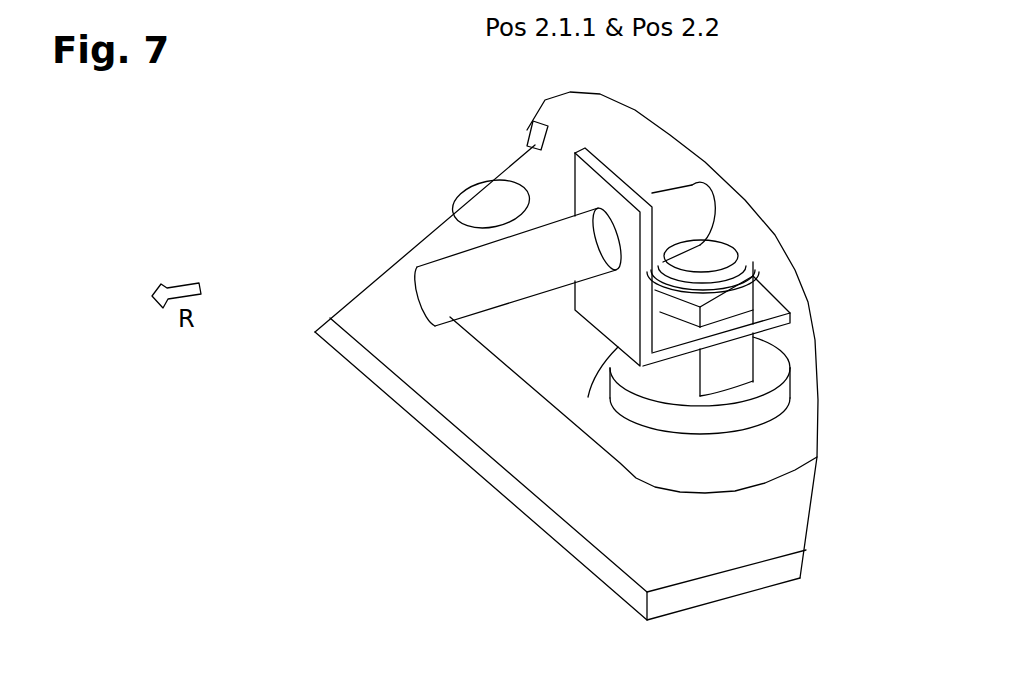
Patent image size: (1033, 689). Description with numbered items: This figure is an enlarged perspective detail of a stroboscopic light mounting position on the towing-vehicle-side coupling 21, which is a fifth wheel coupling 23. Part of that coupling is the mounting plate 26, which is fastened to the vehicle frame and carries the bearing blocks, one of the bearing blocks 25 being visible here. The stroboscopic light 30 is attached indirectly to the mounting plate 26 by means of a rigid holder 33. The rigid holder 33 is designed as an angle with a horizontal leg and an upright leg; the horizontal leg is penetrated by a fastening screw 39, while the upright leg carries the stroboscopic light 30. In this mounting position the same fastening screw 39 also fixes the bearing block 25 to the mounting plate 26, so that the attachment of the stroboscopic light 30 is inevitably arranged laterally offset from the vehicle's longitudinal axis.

The coupling 21 is at (552, 354).
The fifth wheel coupling 23 is at (552, 354).
The bearing block 25 is at (778, 448).
The mounting plate 26 is at (423, 425).
The stroboscopic light 30 is at (460, 277).
The rigid holder 33 is at (603, 170).
The fastening screw 39 is at (733, 246).